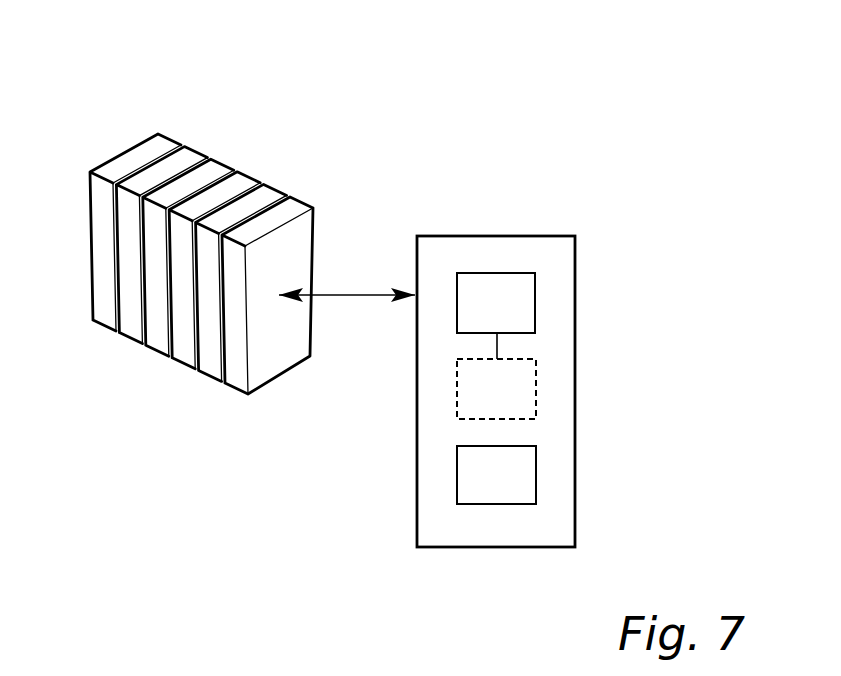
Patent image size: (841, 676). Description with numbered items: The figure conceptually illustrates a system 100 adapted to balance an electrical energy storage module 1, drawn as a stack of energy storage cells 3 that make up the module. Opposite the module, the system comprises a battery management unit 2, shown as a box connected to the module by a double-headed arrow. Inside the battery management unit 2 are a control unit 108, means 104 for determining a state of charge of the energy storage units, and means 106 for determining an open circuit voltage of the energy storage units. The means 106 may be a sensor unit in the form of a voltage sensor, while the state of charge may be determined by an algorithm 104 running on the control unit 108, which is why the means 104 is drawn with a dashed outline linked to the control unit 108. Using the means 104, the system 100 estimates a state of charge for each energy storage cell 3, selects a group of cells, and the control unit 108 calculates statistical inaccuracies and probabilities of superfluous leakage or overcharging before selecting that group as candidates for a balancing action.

The system 100 is at (602, 80).
The electrical energy storage module 1 is at (222, 137).
The battery management unit 2 is at (497, 220).
The energy storage cell 3 is at (258, 377).
The control unit 108 is at (516, 319).
The means for determining a state of charge 104 is at (516, 404).
The means for determining an open circuit voltage 106 is at (516, 492).